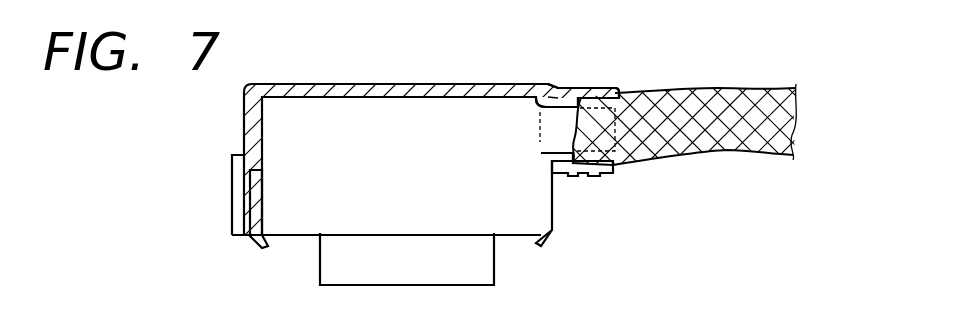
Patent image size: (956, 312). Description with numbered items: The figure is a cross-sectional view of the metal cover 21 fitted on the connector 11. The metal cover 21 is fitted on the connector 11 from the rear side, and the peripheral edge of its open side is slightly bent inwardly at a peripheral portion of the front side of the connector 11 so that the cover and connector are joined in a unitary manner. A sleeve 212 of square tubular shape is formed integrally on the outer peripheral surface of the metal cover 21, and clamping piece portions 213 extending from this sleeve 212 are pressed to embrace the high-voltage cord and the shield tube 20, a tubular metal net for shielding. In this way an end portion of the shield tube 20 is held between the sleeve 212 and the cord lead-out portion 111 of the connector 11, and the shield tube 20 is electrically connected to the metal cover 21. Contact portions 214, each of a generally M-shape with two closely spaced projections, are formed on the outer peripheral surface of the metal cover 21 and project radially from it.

The connector 11 is at (513, 212).
The cord lead-out portion 111 is at (562, 138).
The shield tube 20 is at (748, 90).
The metal cover 21 is at (442, 83).
The sleeve 212 is at (593, 87).
The clamping piece portion 213 is at (617, 173).
The contact portion 214 is at (232, 213).